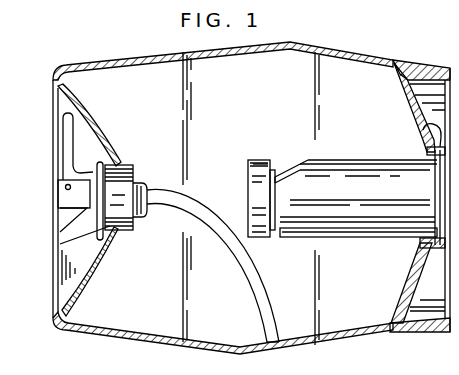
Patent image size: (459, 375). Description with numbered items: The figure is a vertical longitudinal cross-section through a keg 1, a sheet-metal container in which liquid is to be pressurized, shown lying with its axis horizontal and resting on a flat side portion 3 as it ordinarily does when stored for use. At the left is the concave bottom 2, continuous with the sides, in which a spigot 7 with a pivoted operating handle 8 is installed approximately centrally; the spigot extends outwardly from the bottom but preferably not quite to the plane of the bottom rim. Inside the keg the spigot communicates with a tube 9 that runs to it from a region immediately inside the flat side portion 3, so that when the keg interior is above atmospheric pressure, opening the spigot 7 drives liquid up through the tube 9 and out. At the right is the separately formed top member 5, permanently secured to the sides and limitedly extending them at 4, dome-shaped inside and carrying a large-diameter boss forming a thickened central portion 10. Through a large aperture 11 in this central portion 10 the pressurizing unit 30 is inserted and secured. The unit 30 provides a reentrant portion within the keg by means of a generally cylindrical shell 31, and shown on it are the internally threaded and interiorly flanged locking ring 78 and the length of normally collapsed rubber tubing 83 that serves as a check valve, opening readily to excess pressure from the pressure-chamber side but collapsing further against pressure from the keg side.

The keg 1 is at (66, 60).
The concave bottom 2 is at (97, 281).
The flat side portion 3 is at (230, 352).
The extension of keg sides 4 is at (440, 62).
The top member 5 is at (410, 58).
The spigot 7 is at (53, 200).
The pivoted operating handle 8 is at (66, 145).
The tube 9 is at (247, 265).
The thickened central portion 10 is at (420, 128).
The aperture 11 is at (425, 244).
The pressurizing unit 30 is at (254, 157).
The cylindrical shell 31 is at (345, 238).
The internally threaded and interiorly flanged ring 78 is at (247, 188).
The rubber tubing 83 is at (296, 165).